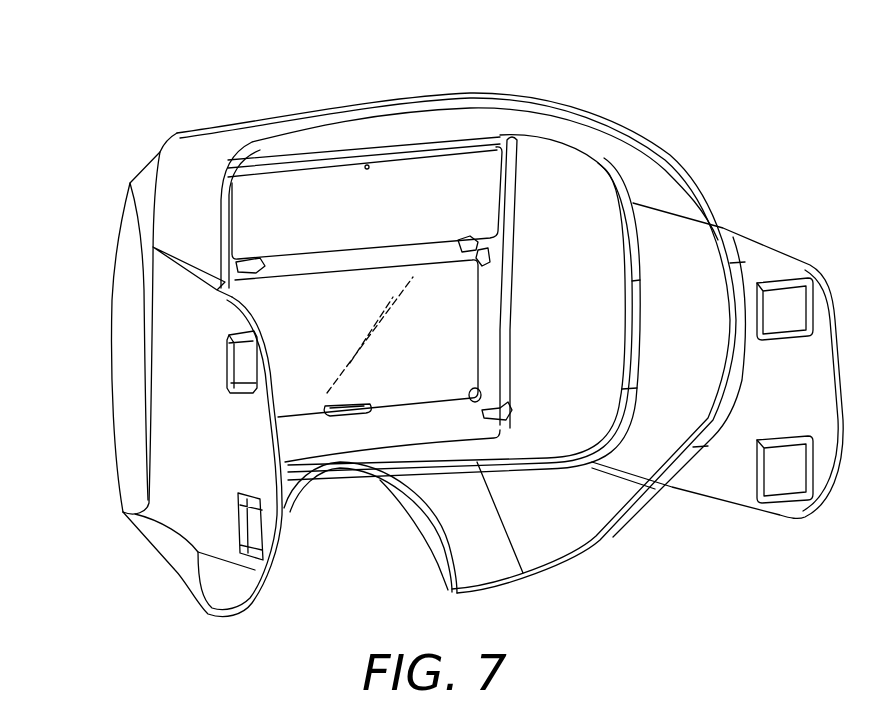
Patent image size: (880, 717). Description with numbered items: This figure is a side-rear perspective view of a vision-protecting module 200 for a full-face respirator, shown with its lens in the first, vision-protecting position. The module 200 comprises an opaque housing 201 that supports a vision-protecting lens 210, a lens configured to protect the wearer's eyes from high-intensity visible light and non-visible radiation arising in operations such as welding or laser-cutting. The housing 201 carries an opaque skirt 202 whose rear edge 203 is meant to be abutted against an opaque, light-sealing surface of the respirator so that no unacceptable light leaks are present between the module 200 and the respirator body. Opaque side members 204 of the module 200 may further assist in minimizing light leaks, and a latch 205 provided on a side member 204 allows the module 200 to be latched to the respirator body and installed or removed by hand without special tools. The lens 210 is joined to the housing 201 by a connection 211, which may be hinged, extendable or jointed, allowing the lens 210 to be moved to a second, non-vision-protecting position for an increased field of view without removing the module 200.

The vision-protecting module 200 is at (178, 58).
The opaque housing 201 is at (143, 177).
The opaque skirt 202 is at (527, 537).
The rear edge 203 is at (235, 197).
The side member 204 is at (190, 461).
The latch 205 is at (247, 367).
The vision-protecting lens 210 is at (287, 313).
The connection 211 is at (588, 98).